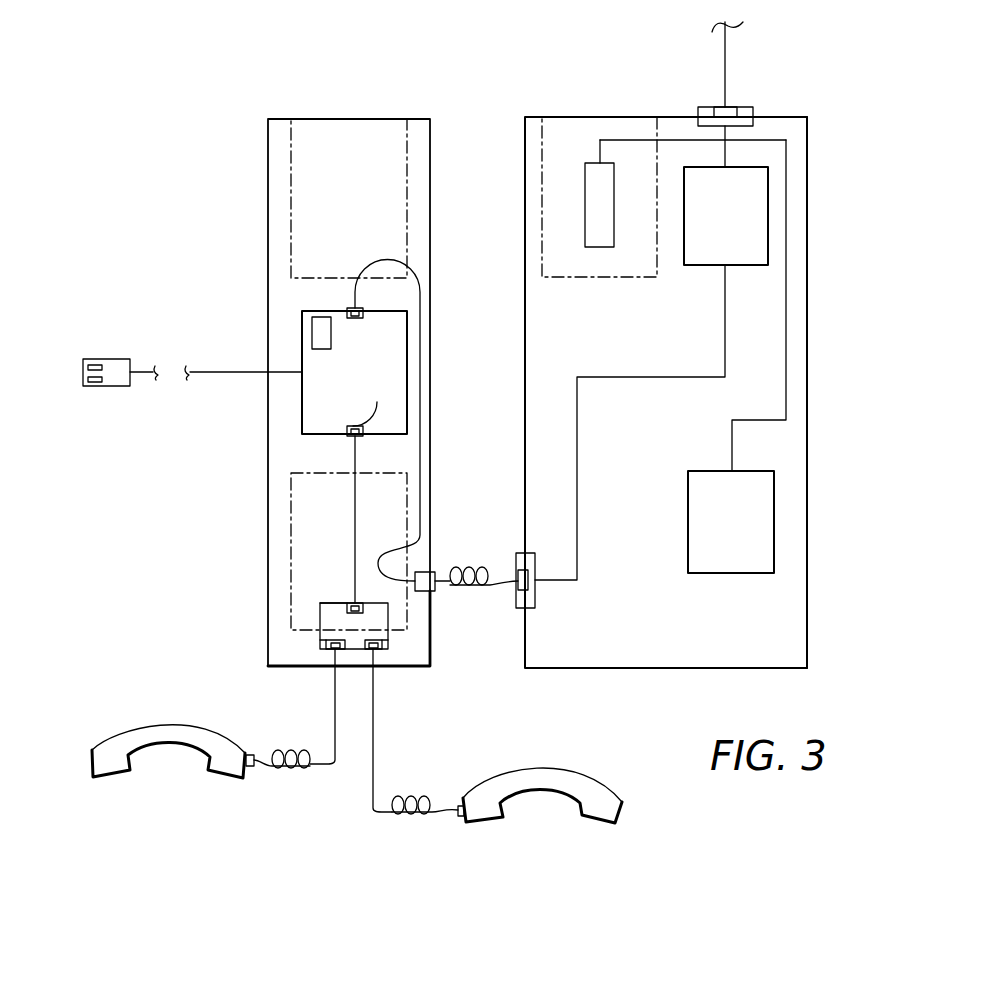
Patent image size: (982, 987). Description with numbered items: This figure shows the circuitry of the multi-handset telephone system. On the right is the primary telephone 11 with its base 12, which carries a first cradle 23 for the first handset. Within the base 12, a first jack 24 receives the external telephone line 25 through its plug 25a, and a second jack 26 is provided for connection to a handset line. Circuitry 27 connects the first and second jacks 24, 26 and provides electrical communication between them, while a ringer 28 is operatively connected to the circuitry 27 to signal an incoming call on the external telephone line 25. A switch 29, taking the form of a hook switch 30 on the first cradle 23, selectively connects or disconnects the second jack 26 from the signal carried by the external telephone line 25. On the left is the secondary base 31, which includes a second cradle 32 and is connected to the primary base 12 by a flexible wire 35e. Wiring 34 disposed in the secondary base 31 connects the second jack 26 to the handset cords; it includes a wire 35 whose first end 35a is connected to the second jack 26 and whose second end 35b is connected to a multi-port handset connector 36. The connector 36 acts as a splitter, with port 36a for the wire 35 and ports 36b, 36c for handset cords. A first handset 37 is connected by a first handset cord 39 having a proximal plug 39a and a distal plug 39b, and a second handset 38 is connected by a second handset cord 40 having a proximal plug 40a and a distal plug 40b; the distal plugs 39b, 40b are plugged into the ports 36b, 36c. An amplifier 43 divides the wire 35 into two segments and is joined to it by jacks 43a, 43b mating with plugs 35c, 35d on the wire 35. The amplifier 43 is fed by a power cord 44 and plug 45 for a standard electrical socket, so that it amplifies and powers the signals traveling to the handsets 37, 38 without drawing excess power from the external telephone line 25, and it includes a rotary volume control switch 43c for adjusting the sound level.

The primary telephone 11 is at (825, 310).
The base 12 is at (807, 155).
The first cradle 23 is at (557, 132).
The first jack 24 is at (698, 115).
The external telephone line 25 is at (722, 60).
The plug 25a is at (728, 107).
The second jack 26 is at (525, 560).
The circuitry 27 is at (703, 282).
The ringer 28 is at (727, 600).
The switch 29 is at (625, 120).
The hook switch 30 is at (585, 218).
The secondary base 31 is at (268, 205).
The second cradle 32 is at (345, 125).
The wiring 34 is at (325, 460).
The wire 35 is at (355, 452).
The first end 35a is at (520, 585).
The second end 35b is at (352, 603).
The plug 35c is at (347, 310).
The plug 35d is at (347, 436).
The flexible wire 35e is at (462, 573).
The multi-port handset connector 36 is at (330, 622).
The port 36a is at (320, 607).
The port 36b is at (320, 640).
The port 36c is at (388, 642).
The first handset 37 is at (583, 775).
The second handset 38 is at (140, 735).
The first handset cord 39 is at (410, 805).
The proximal plug 39a is at (460, 816).
The distal plug 39b is at (374, 652).
The second handset cord 40 is at (303, 773).
The proximal plug 40a is at (256, 757).
The distal plug 40b is at (334, 652).
The amplifier 43 is at (302, 352).
The jack 43a is at (365, 315).
The jack 43b is at (377, 402).
The rotary volume control switch 43c is at (312, 325).
The power cord 44 is at (218, 372).
The plug 45 is at (103, 359).